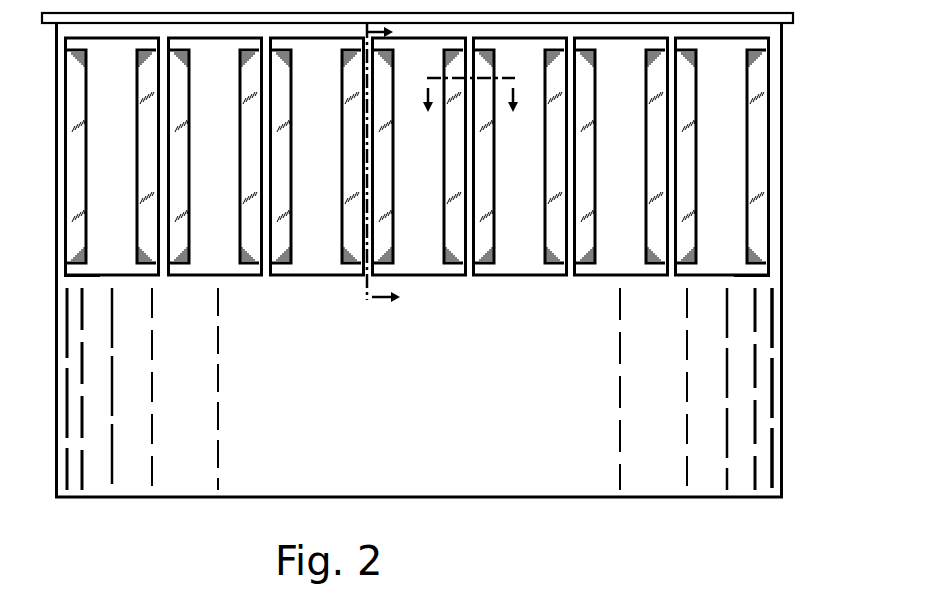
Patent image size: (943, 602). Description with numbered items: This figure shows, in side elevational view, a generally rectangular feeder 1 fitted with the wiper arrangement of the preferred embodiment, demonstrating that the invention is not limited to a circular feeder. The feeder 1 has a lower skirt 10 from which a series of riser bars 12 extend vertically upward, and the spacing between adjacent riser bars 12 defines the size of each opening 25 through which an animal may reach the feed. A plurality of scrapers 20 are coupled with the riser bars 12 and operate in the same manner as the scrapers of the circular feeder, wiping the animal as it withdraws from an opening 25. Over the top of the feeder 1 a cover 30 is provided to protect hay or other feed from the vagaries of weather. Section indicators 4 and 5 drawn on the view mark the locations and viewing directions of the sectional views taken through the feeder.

The feeder 1 is at (421, 280).
The skirt 10 is at (419, 260).
The riser bars 12 is at (772, 182).
The scrapers 20 is at (246, 222).
The opening 25 is at (94, 280).
The cover 30 is at (62, 18).
The section line 4' 4 is at (396, 171).
The section line 5' 5 is at (469, 113).